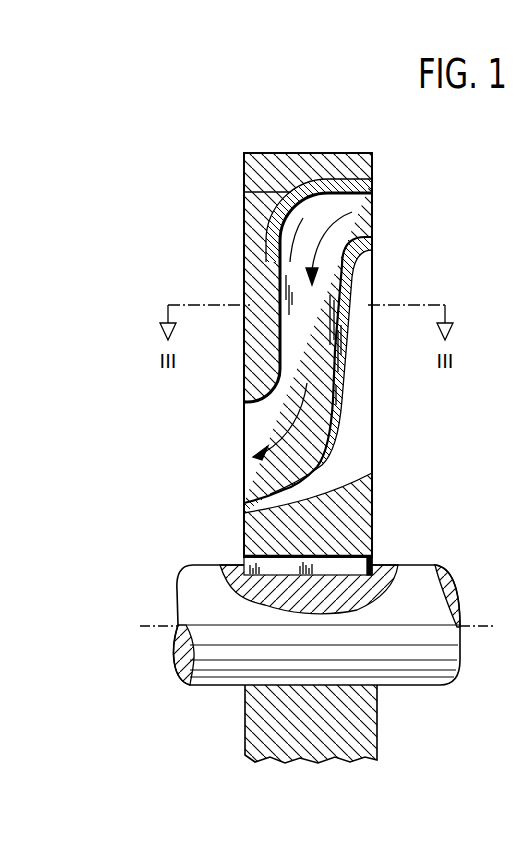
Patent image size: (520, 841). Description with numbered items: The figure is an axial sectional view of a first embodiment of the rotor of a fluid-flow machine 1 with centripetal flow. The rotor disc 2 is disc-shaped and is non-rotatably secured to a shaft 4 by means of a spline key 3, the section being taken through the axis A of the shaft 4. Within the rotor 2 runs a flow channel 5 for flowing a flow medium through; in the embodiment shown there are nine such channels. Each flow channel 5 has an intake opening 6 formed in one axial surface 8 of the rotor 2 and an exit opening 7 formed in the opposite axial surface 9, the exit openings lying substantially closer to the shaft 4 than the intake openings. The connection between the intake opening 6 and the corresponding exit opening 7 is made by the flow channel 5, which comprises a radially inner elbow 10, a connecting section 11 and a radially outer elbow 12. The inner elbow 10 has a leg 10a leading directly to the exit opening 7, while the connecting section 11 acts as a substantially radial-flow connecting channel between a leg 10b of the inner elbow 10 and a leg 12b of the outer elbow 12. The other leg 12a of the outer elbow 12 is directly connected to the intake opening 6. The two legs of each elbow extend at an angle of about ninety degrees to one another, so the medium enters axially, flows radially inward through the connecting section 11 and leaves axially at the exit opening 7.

The fluid-flow machine 1 is at (264, 132).
The rotor disc 2 is at (292, 163).
The spline key 3 is at (342, 568).
The shaft 4 is at (367, 647).
The flow channel 5 is at (320, 332).
The intake opening 6 is at (373, 208).
The exit opening 7 is at (244, 456).
The axial surface 8 is at (397, 435).
The opposite axial surface 9 is at (242, 182).
The radially inner elbow 10 is at (373, 477).
The leg of inner elbow 10a is at (247, 518).
The leg of inner elbow 10b is at (373, 396).
The connecting section 11 is at (373, 326).
The radially outer elbow 12 is at (290, 192).
The leg of outer elbow 12a is at (333, 190).
The leg of outer elbow 12b is at (278, 224).
The axis A is at (326, 614).